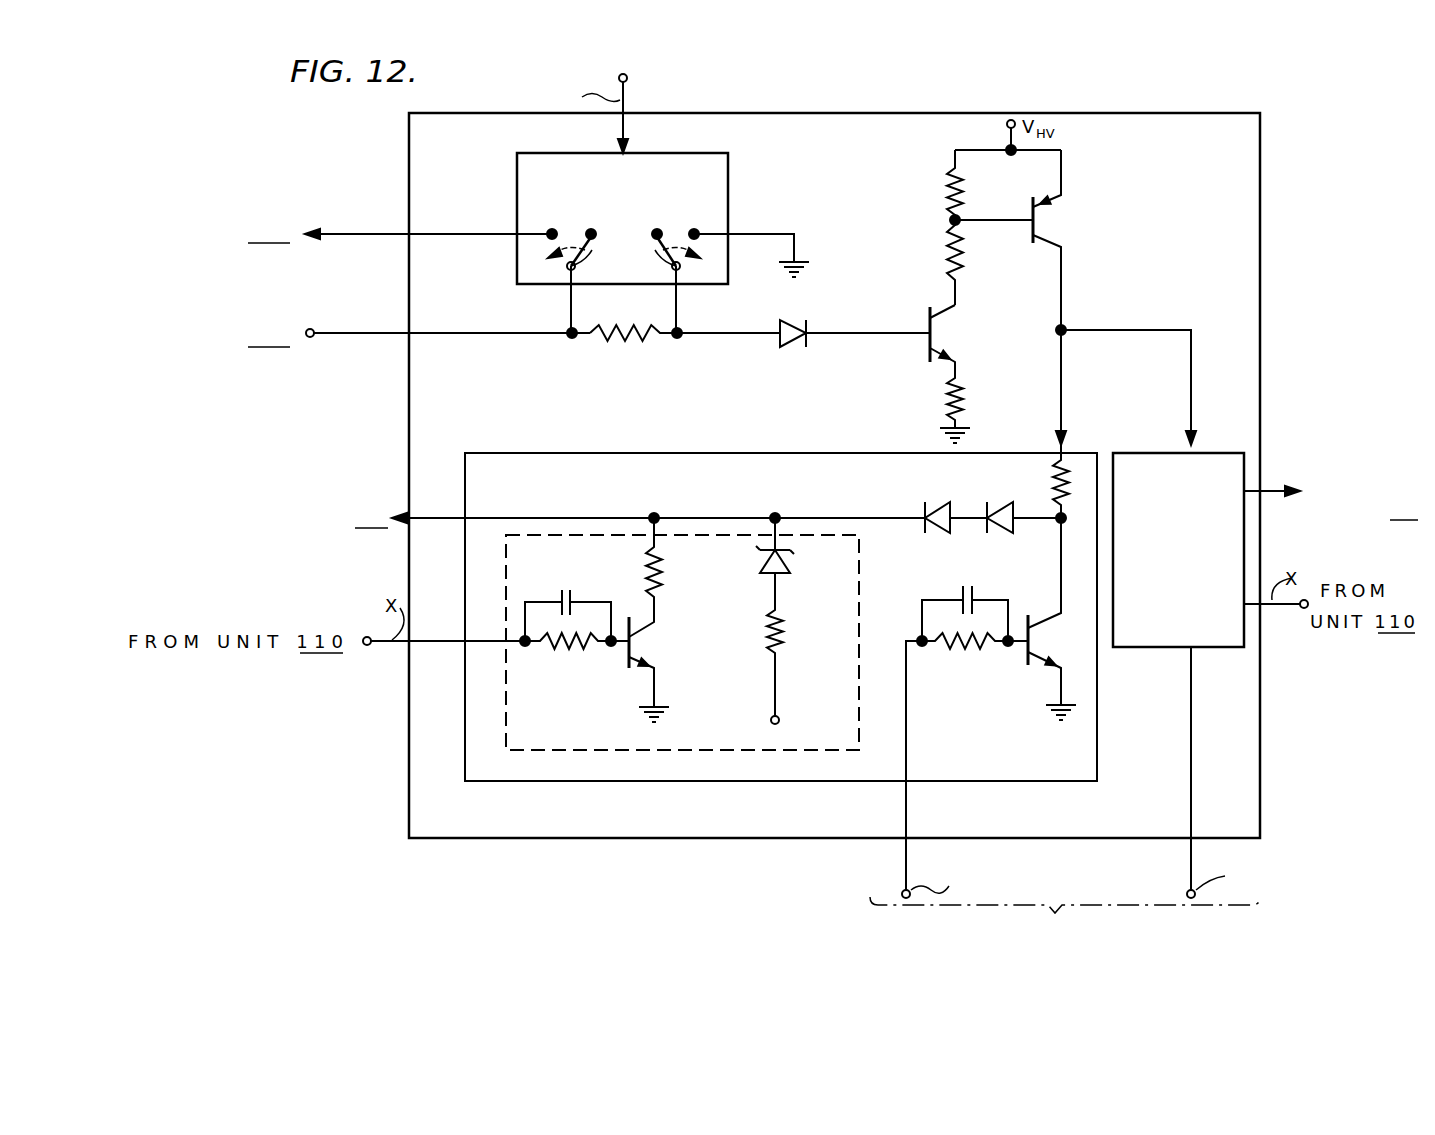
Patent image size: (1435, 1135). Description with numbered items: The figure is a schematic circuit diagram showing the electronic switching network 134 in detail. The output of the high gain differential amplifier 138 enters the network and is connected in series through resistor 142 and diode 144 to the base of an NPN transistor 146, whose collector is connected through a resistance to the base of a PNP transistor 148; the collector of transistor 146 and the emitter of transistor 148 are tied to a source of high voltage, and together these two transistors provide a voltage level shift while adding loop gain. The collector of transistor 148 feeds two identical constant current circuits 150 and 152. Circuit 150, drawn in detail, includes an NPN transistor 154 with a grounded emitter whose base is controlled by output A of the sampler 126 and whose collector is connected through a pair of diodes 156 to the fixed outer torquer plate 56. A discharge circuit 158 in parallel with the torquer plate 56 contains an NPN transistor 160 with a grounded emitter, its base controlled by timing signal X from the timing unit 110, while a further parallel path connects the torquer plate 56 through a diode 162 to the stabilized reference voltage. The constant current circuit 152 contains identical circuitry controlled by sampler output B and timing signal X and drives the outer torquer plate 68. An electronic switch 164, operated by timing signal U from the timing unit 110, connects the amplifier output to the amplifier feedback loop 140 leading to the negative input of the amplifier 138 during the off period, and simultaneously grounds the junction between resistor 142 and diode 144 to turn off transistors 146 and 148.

The electronic switching network 134 is at (408, 735).
The electronic switch 164 is at (728, 183).
The amplifier feedback loop 140 is at (367, 233).
The high gain differential amplifier 138 is at (342, 336).
The resistor 142 is at (637, 342).
The diode 144 is at (797, 346).
The NPN transistor 146 is at (921, 300).
The PNP transistor 148 is at (1060, 212).
The constant current circuit 150 is at (466, 453).
The constant current circuit 152 is at (1178, 671).
The NPN transistor 154 is at (1014, 659).
The pair of diodes 156 is at (1010, 470).
The discharge circuit 158 is at (535, 535).
The NPN transistor 160 is at (657, 645).
The diode 162 is at (789, 560).
The timing unit 110 is at (626, 98).
The fixed outer torquer plate 56 is at (515, 517).
The fixed outer torquer plate 68 is at (1331, 480).
The sampler 126 is at (1065, 906).